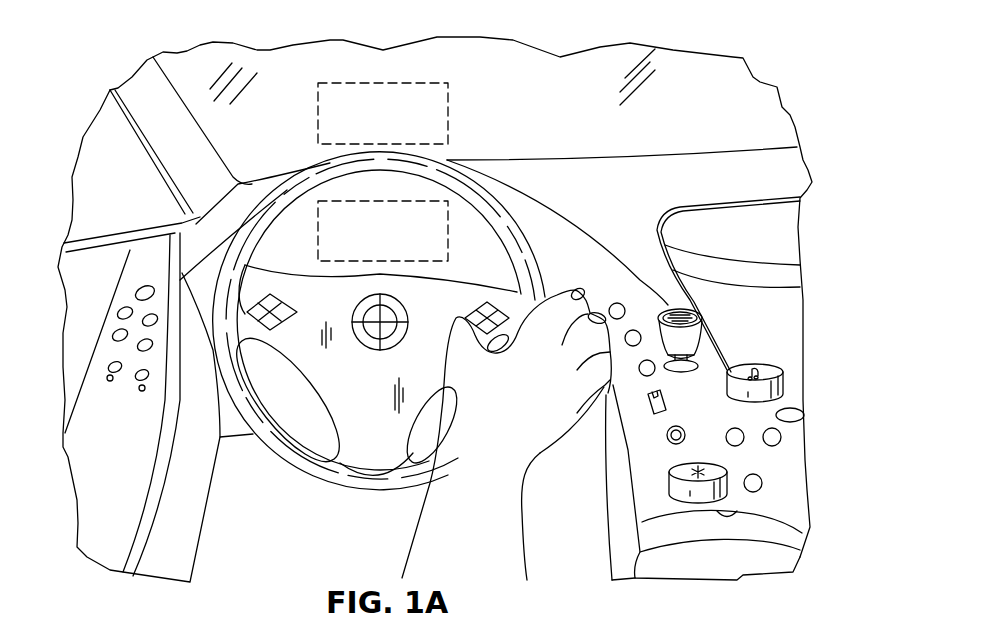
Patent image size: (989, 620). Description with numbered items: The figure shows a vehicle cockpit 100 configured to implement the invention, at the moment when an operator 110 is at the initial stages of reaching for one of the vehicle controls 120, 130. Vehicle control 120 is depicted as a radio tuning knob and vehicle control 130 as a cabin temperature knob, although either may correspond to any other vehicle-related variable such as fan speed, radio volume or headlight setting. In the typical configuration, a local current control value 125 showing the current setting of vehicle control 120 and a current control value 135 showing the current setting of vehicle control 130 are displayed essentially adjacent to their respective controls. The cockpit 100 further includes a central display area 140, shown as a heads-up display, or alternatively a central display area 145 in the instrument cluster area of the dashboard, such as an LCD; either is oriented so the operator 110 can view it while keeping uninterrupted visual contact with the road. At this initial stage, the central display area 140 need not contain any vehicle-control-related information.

The vehicle cockpit 100 is at (127, 40).
The operator 110 is at (545, 455).
The vehicle control 120 is at (782, 367).
The local current control value 125 is at (787, 336).
The vehicle control 130 is at (722, 468).
The current control value 135 is at (737, 451).
The central display area 140 is at (432, 83).
The central display area 145 is at (400, 241).